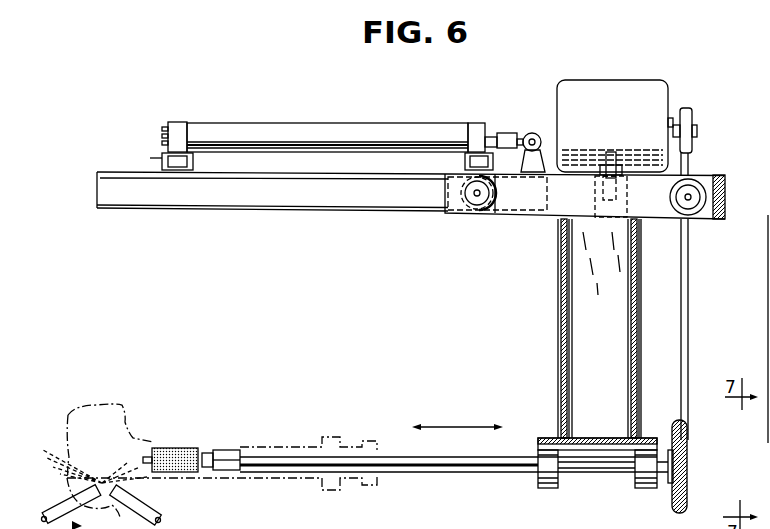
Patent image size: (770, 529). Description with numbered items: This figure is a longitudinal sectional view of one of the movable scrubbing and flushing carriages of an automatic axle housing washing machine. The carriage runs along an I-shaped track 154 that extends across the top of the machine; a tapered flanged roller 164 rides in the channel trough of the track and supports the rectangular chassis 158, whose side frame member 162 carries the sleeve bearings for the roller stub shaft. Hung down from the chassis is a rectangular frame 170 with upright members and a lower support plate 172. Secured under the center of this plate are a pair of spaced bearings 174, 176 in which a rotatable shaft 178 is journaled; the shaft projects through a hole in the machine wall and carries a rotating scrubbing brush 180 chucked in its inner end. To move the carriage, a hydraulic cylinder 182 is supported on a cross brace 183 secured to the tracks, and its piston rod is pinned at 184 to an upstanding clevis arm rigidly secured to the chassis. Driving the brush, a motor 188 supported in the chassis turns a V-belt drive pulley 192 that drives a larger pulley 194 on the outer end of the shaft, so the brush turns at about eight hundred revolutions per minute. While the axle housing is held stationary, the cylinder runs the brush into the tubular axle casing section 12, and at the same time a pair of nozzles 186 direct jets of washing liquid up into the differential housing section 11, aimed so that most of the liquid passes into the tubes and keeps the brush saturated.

The differential housing section 11 is at (127, 399).
The axle casing section 12 is at (293, 446).
The I-shaped track 154 is at (282, 200).
The rectangular chassis 158 is at (731, 178).
The side frame member 162 is at (512, 209).
The tapered flanged roller 164 is at (693, 215).
The rectangular frame 170 is at (553, 312).
The lower support plate 172 is at (551, 437).
The bearing 174 is at (547, 489).
The bearing 176 is at (644, 489).
The rotatable shaft 178 is at (405, 473).
The rotating scrubbing brush 180 is at (178, 448).
The hydraulic cylinder 182 is at (255, 123).
The cross brace 183 is at (160, 160).
The piston rod pin 184 is at (532, 132).
The nozzle 186 is at (117, 505).
The motor 188 is at (638, 81).
The V-belt drive pulley 192 is at (689, 117).
The pulley 194 is at (687, 488).